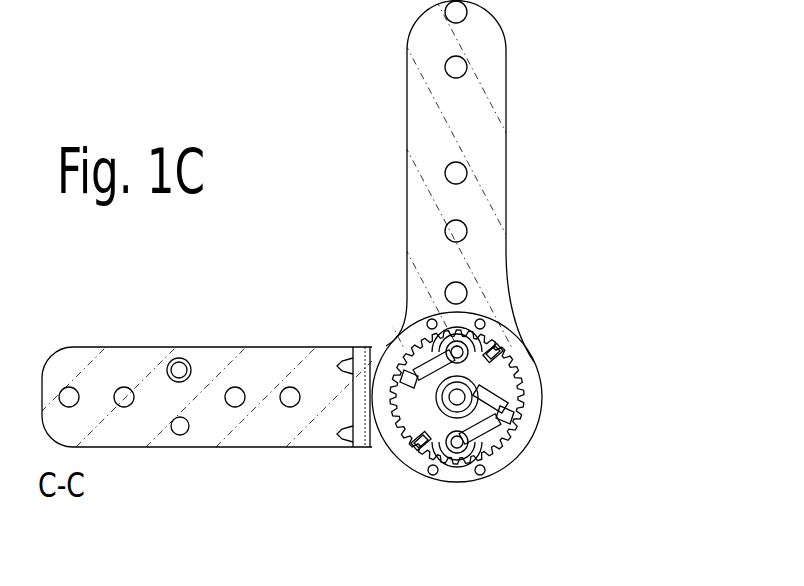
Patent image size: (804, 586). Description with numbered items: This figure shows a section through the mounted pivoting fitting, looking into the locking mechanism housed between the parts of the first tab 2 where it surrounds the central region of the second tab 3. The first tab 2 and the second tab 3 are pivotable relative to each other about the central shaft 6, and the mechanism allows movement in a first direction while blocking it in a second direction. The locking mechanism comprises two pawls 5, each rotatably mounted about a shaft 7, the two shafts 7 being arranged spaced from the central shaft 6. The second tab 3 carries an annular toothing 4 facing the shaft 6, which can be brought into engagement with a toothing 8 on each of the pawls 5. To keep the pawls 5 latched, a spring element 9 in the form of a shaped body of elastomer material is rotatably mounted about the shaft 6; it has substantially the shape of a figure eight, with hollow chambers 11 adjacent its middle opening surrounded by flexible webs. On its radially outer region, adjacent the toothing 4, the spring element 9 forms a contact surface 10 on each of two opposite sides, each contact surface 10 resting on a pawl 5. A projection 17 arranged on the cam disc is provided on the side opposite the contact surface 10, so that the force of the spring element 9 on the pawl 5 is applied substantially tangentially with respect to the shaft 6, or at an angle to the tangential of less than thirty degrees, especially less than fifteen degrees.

The first tab 2 is at (230, 365).
The second tab 3 is at (472, 130).
The annular toothing 4 is at (500, 345).
The pawl 5 is at (483, 372).
The shaft 6 is at (470, 345).
The shaft 7 is at (375, 492).
The toothing 8 is at (648, 458).
The spring element 9 is at (467, 437).
The contact surface 10 is at (392, 372).
The hollow chamber 11 is at (490, 447).
The projection 17 is at (405, 318).